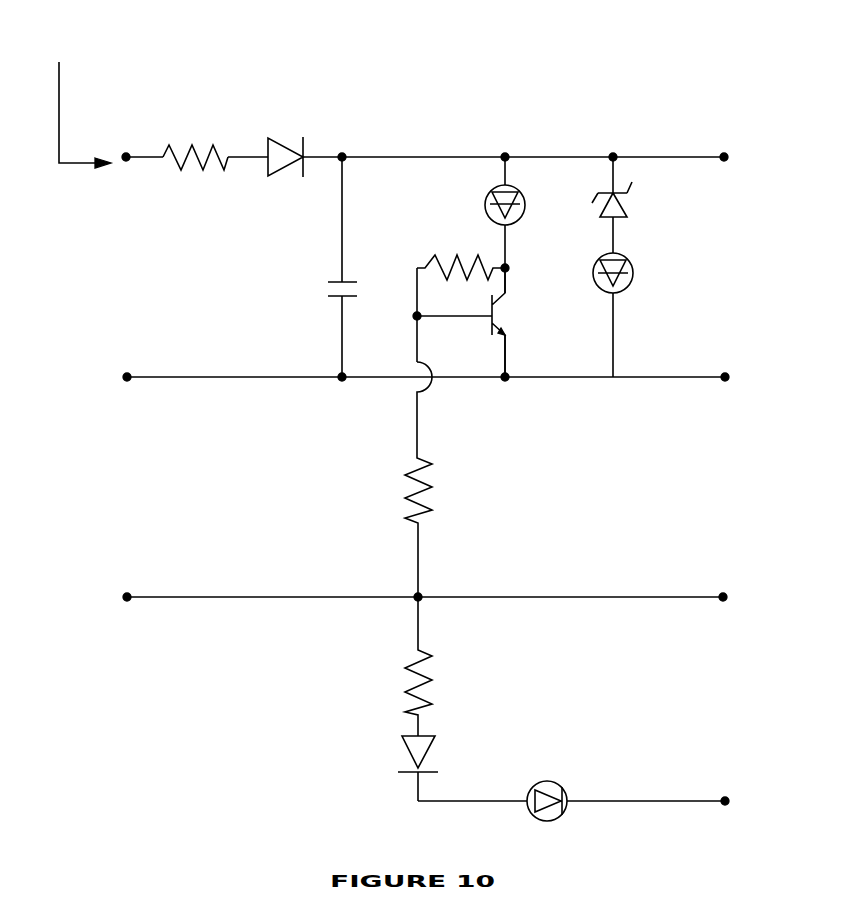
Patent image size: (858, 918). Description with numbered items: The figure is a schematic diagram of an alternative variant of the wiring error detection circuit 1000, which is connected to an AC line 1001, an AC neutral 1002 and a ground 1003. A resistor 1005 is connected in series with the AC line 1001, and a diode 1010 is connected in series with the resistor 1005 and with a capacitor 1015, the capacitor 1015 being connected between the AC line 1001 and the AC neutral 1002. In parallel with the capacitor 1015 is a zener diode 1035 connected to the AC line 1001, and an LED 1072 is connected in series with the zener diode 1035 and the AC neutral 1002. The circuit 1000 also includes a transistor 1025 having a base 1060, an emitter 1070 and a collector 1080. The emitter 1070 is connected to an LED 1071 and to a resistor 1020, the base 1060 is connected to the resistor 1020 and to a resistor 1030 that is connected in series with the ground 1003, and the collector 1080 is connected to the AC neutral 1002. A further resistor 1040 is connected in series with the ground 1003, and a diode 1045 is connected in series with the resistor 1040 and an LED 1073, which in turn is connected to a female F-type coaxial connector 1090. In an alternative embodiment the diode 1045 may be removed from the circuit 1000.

The circuit 1000 is at (78, 102).
The AC line 1001 is at (126, 152).
The AC neutral 1002 is at (126, 375).
The ground 1003 is at (127, 595).
The resistor 1005 is at (193, 138).
The diode 1010 is at (285, 138).
The capacitor 1015 is at (330, 272).
The resistor 1020 is at (462, 253).
The transistor 1025 is at (506, 317).
The resistor 1030 is at (390, 498).
The zener diode 1035 is at (642, 193).
The resistor 1040 is at (430, 640).
The diode 1045 is at (427, 730).
The base 1060 is at (460, 318).
The emitter 1070 is at (507, 277).
The LED 1071 is at (527, 188).
The LED 1072 is at (642, 275).
The LED 1073 is at (548, 777).
The collector 1080 is at (507, 362).
The female F-type coaxial connector 1090 is at (727, 796).